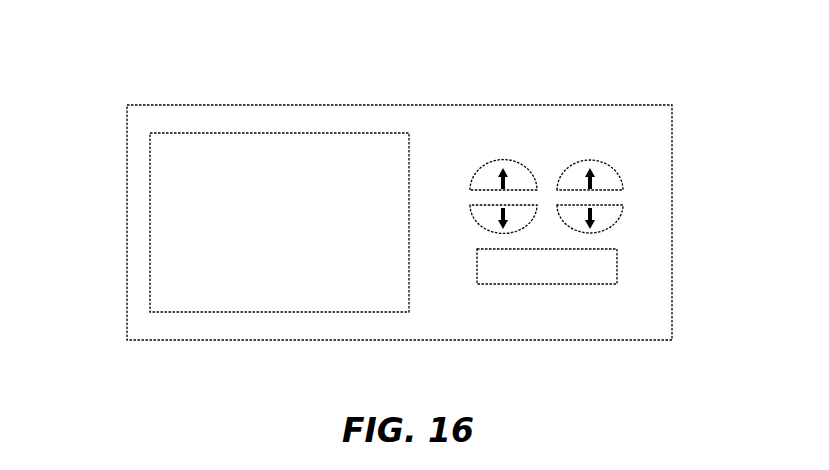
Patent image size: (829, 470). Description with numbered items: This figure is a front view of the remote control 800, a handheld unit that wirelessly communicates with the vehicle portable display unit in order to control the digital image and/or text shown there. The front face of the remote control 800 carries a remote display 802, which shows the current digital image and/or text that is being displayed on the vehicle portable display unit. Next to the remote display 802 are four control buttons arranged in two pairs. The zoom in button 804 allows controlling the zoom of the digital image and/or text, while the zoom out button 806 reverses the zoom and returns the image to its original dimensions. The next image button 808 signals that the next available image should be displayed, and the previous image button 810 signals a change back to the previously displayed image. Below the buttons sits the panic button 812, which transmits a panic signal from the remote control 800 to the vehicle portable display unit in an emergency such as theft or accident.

The remote control 800 is at (118, 223).
The remote display 802 is at (271, 223).
The zoom in button 804 is at (493, 220).
The zoom out button 806 is at (507, 175).
The next image button 808 is at (592, 182).
The previous image button 810 is at (593, 223).
The panic button 812 is at (538, 265).